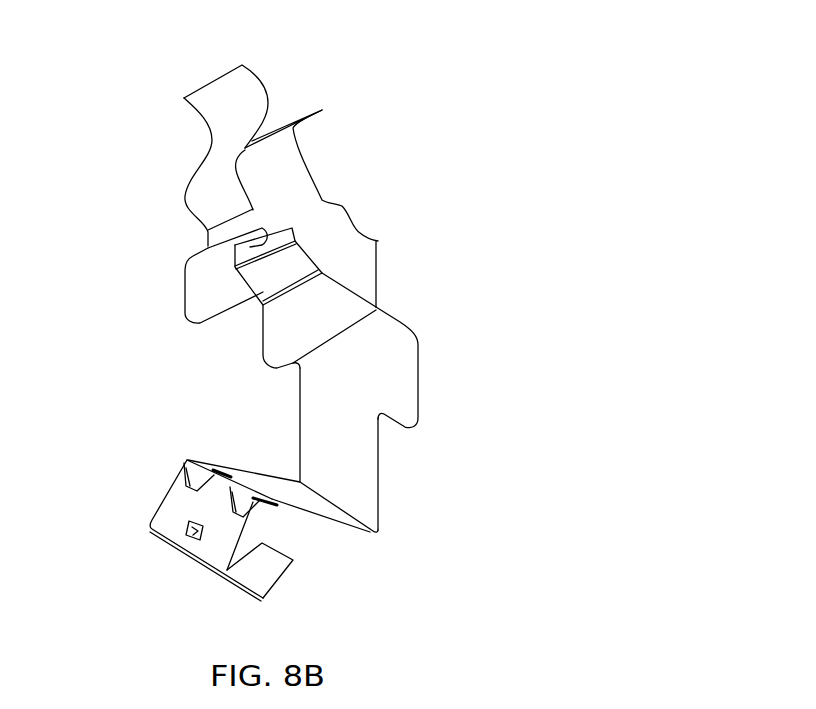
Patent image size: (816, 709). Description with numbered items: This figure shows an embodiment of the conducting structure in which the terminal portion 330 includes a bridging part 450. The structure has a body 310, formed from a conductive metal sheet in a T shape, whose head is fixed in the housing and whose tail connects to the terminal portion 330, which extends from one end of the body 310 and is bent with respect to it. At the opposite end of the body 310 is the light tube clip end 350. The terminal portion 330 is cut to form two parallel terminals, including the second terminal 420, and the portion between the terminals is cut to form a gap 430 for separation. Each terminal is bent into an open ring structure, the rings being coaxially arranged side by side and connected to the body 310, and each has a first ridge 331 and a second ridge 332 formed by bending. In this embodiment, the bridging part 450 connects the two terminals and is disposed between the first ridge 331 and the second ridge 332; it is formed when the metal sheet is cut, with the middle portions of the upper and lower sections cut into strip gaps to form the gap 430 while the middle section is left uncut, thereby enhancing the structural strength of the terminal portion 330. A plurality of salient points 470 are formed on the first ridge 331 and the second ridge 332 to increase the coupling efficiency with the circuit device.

The body 310 is at (363, 443).
The terminal portion 330 is at (322, 511).
The first ridge 331 is at (183, 463).
The second ridge 332 is at (263, 600).
The light tube clip end 350 is at (280, 178).
The second terminal 420 is at (233, 530).
The gap 430 is at (190, 526).
The bridging part 450 is at (192, 545).
The salient points 470 is at (200, 470).